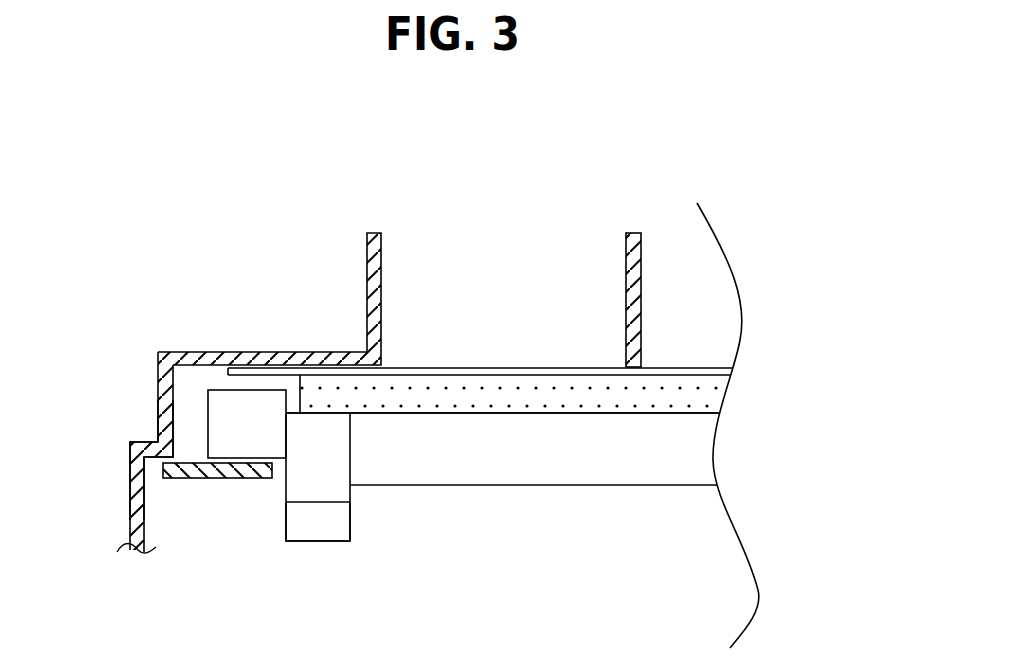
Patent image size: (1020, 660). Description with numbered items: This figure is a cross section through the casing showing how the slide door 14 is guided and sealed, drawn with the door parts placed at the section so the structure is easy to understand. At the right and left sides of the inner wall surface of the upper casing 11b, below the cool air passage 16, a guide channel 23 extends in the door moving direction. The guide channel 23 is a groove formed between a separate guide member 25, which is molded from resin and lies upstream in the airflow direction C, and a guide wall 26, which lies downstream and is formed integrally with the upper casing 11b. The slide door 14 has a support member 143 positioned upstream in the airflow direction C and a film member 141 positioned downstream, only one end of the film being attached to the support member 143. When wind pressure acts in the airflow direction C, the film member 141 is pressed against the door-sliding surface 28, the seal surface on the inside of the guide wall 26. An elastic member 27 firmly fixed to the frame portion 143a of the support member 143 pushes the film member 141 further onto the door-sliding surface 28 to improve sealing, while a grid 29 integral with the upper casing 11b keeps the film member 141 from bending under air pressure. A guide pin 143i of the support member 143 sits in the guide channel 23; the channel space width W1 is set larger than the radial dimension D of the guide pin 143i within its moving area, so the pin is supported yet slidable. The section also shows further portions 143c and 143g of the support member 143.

The upper casing 11b is at (367, 259).
The slide door 14 is at (704, 513).
The cool air passage 16 is at (535, 270).
The guide channel 23 is at (175, 418).
The guide member 25 is at (213, 480).
The guide wall 26 is at (245, 352).
The elastic member 27 is at (700, 392).
The door-sliding surface 28 is at (163, 372).
The grid 29 is at (641, 275).
The film member 141 is at (663, 368).
The support member 143 is at (532, 498).
The frame portion 143a is at (695, 465).
The flow path portion 143c is at (335, 452).
The flow path portion 143g is at (302, 525).
The guide pin 143i is at (265, 433).
The channel space width W1 is at (202, 448).
The radial dimension D is at (232, 392).
The airflow direction C is at (575, 617).